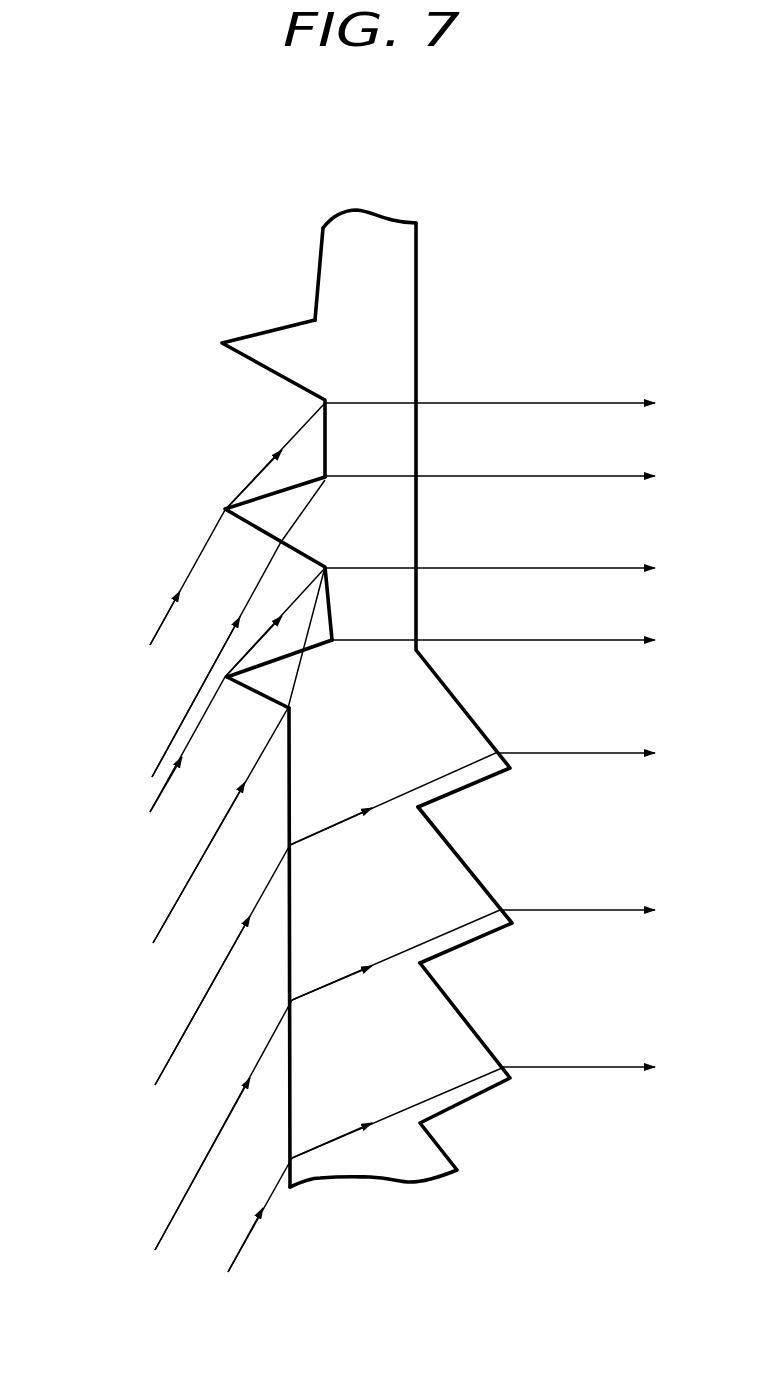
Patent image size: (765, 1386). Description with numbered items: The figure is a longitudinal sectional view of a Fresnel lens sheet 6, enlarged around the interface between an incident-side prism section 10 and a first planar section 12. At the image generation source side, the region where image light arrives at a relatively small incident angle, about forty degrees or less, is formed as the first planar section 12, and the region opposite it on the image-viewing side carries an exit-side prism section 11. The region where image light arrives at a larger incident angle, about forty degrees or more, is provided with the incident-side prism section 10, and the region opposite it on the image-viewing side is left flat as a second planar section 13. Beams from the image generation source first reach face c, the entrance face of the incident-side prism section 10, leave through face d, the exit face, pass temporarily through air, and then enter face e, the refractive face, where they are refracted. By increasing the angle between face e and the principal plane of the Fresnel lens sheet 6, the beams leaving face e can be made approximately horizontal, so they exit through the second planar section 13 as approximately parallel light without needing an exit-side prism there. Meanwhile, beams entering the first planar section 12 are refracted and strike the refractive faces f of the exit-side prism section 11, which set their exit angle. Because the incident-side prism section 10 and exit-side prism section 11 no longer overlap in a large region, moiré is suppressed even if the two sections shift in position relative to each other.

The Fresnel lens sheet 6 is at (387, 232).
The incident-side prism section 10 is at (270, 342).
The exit-side prism section 11 is at (400, 1172).
The first planar section 12 is at (290, 1123).
The second planar section 13 is at (417, 282).
The entrance face c is at (253, 692).
The exit face d is at (257, 664).
The refractive face e is at (325, 600).
The refractive face of the exit-side prism section f is at (455, 850).